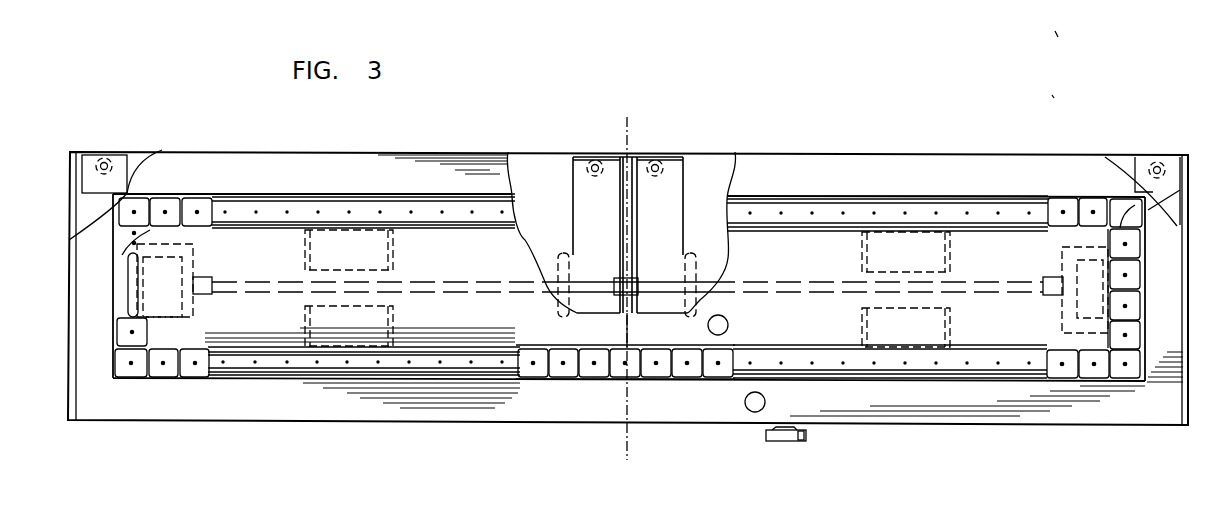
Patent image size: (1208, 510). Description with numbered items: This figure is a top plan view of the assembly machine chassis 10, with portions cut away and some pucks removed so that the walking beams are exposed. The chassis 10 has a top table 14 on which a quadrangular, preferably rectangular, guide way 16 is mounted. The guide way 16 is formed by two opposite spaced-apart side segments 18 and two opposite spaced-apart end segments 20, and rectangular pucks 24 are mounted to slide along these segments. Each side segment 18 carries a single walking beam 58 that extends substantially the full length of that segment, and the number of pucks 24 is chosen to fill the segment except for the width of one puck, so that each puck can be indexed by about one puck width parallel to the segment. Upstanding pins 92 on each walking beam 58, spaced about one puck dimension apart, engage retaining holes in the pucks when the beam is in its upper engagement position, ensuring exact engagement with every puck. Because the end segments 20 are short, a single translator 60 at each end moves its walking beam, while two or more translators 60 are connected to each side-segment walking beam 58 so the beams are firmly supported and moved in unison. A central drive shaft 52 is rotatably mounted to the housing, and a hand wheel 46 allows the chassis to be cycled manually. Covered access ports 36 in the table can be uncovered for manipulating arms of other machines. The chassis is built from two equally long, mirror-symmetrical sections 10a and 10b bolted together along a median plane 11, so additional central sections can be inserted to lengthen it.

The assembly machine chassis 10 is at (1087, 145).
The section 10a is at (528, 155).
The section 10b is at (721, 158).
The median plane 11 is at (632, 143).
The top table 14 is at (913, 165).
The guide way 16 is at (307, 196).
The side segments 18 is at (983, 210).
The end segments 20 is at (134, 232).
The pucks 24 is at (655, 372).
The covered access ports 36 is at (719, 335).
The hand wheel 46 is at (767, 443).
The central drive shaft 52 is at (660, 287).
The walking beam 58 is at (472, 208).
The translators 60 is at (177, 275).
The upstanding pins 92 is at (440, 211).